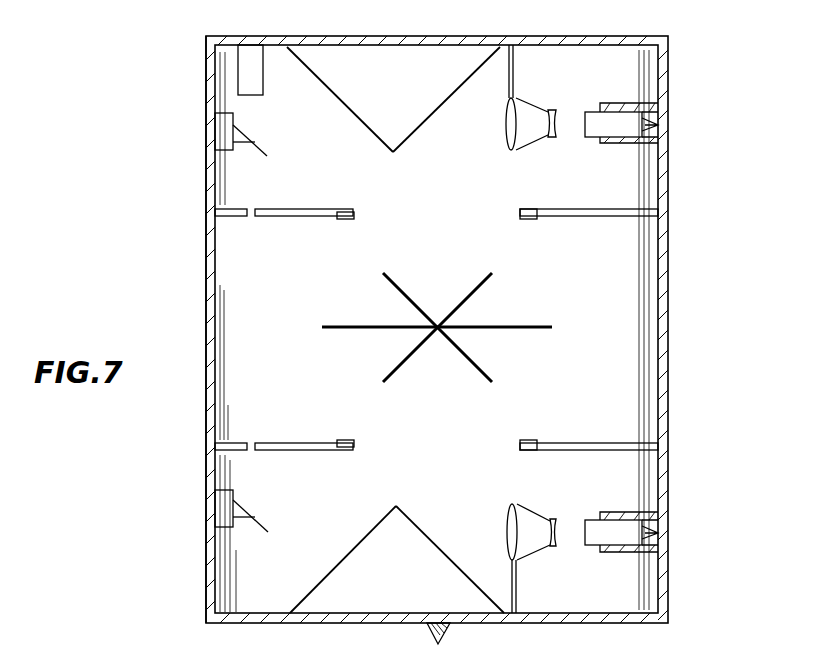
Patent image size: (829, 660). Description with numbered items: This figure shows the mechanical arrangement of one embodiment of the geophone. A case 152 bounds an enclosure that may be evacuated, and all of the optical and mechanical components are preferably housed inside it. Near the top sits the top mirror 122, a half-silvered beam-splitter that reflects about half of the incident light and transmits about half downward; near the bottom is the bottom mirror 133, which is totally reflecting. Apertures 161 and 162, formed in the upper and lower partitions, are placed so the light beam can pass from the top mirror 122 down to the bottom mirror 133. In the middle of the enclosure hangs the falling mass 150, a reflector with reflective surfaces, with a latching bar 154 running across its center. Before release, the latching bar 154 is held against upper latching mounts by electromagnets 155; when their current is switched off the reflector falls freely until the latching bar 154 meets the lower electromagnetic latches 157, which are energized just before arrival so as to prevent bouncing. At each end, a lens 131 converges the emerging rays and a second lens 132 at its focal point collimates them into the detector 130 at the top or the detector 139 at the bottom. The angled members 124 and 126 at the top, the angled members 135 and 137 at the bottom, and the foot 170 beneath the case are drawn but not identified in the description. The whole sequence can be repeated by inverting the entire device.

The top mirror 122 is at (257, 145).
The first reflector panel 124 is at (376, 138).
The second reflector panel 126 is at (430, 118).
The detector 130 is at (635, 126).
The lens 131 is at (511, 150).
The second lens 132 is at (556, 118).
The bottom mirror 133 is at (262, 517).
The third reflector panel 135 is at (347, 548).
The fourth reflector panel 137 is at (440, 520).
The detector 139 is at (628, 531).
The falling mass 150 is at (489, 297).
The case 152 is at (206, 458).
The latching bar 154 is at (513, 329).
The electromagnets 155 is at (522, 220).
The lower electromagnetic latches 157 is at (522, 440).
The aperture 161 is at (250, 215).
The aperture 162 is at (252, 438).
The base foot 170 is at (432, 632).